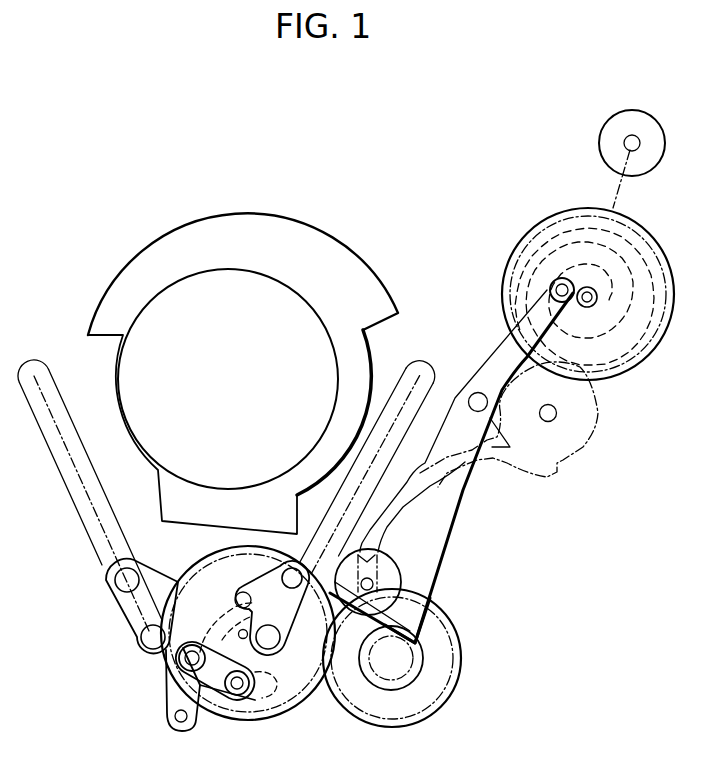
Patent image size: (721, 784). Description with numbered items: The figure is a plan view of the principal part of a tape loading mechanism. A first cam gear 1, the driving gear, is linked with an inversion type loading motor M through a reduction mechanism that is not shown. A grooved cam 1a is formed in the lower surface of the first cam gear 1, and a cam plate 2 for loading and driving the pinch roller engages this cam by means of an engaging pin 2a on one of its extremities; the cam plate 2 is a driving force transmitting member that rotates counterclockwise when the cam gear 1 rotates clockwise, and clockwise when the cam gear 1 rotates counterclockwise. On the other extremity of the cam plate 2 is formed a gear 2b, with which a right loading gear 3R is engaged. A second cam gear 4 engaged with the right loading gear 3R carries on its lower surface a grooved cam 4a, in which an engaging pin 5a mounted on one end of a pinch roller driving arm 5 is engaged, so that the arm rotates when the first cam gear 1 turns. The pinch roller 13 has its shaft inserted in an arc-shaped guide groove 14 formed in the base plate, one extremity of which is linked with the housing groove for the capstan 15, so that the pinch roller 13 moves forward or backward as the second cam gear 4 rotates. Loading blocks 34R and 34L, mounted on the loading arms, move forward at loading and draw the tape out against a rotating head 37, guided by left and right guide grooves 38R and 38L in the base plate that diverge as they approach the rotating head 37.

The inversion type loading motor M is at (599, 129).
The first cam gear 1 is at (662, 264).
The grooved cam 1a is at (620, 245).
The cam plate 2 is at (502, 355).
The engaging pin 2a is at (551, 287).
The gear 2b is at (418, 628).
The right loading gear 3R is at (452, 682).
The second cam gear 4 is at (290, 702).
The grooved cam 4a is at (260, 697).
The pinch roller driving arm 5 is at (180, 695).
The engaging pin 5a is at (233, 694).
The pinch roller 13 is at (395, 578).
The arc-shaped guide groove 14 is at (423, 500).
The capstan 15 is at (556, 416).
The left loading block 34L is at (121, 620).
The right loading block 34R is at (253, 582).
The rotating head 37 is at (303, 321).
The left guide groove 38L is at (72, 495).
The right guide groove 38R is at (427, 363).